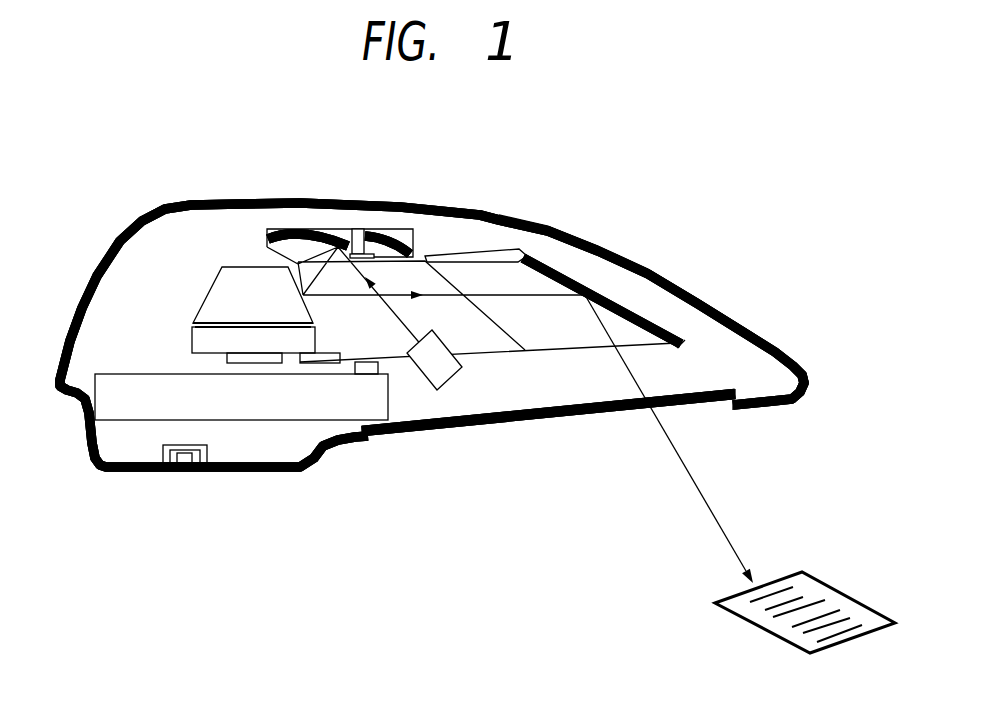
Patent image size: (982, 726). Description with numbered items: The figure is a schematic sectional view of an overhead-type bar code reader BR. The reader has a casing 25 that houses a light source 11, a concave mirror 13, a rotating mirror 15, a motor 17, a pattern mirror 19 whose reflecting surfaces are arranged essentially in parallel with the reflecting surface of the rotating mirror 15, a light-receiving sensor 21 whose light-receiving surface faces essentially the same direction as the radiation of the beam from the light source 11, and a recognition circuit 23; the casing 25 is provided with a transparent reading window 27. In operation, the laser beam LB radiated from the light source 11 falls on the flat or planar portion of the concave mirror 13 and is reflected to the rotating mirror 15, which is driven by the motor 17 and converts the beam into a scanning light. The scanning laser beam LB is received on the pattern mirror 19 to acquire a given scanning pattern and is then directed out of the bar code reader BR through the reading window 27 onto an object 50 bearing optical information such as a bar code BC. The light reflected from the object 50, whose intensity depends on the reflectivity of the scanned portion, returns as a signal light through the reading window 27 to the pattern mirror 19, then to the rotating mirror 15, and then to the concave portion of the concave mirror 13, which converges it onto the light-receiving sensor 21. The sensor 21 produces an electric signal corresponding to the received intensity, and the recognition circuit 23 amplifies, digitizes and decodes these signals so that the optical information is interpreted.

The bar code reader BR is at (240, 193).
The light source 11 is at (443, 377).
The concave mirror 13 is at (367, 229).
The rotating mirror 15 is at (227, 282).
The motor 17 is at (213, 343).
The pattern mirror 19 is at (558, 270).
The light-receiving sensor 21 is at (368, 367).
The recognition circuit 23 is at (283, 407).
The casing 25 is at (677, 283).
The reading window 27 is at (530, 422).
The object to be read 50 is at (807, 582).
The bar code BC is at (773, 607).
The laser beam LB is at (698, 487).